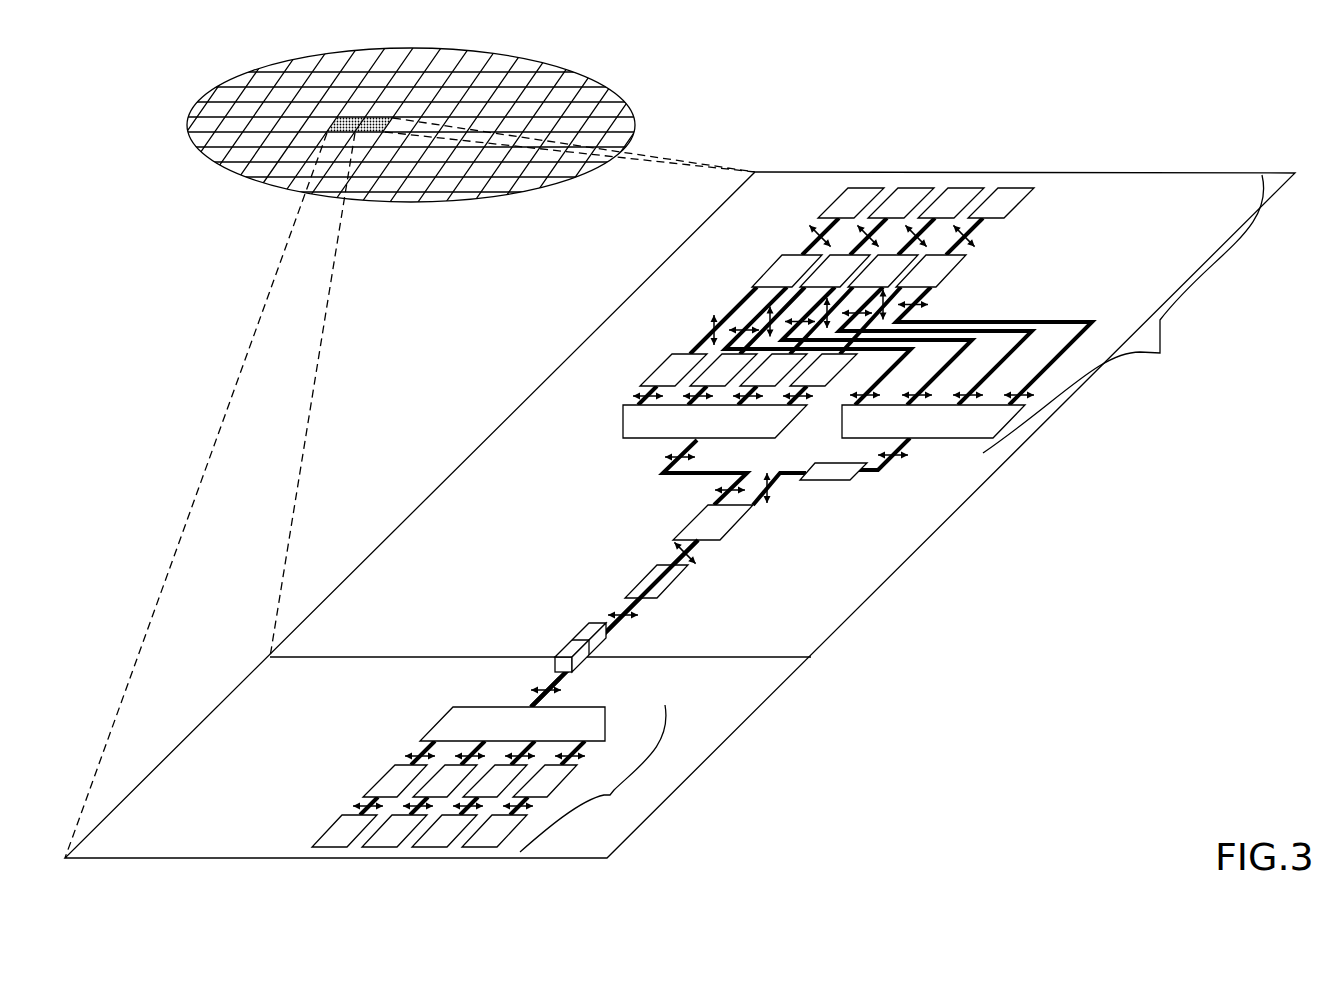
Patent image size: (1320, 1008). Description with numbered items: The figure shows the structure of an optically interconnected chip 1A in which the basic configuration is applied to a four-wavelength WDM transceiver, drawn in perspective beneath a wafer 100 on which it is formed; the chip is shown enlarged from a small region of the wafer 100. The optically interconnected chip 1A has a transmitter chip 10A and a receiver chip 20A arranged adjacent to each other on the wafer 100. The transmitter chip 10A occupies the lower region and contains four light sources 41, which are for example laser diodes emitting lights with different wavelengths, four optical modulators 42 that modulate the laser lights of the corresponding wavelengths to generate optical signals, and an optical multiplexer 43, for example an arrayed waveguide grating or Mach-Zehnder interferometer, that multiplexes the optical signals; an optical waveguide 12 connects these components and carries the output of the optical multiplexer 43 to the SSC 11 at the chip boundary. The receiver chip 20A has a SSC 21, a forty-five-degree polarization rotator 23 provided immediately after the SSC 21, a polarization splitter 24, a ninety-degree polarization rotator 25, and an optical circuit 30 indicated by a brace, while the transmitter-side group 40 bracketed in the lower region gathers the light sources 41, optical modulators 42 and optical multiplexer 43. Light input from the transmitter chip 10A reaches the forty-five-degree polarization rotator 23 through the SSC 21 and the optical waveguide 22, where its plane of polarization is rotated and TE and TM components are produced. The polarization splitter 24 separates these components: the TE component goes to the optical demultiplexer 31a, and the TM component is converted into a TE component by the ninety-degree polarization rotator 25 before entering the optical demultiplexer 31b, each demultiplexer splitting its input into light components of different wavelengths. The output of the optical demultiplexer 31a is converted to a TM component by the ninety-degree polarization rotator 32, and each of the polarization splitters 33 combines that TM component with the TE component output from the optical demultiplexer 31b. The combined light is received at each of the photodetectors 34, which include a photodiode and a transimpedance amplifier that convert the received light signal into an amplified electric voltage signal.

The wafer 100 is at (616, 90).
The optically interconnected chip 1A is at (410, 338).
The transmitter chip 10A is at (228, 700).
The receiver chip 20A is at (571, 356).
The SSC 11 is at (568, 652).
The optical waveguide 12 is at (530, 688).
The SSC 21 is at (592, 625).
The optical waveguide 22 is at (617, 622).
The 45-degree polarization rotator 23 is at (648, 587).
The polarization splitter 24 is at (697, 530).
The 90-degree polarization rotator 25 is at (822, 478).
The optical circuit 30 is at (1123, 314).
The optical demultiplexer 31a is at (645, 428).
The optical demultiplexer 31b is at (990, 440).
The 90-degree polarization rotator 32 is at (660, 366).
The polarization splitters 33 is at (767, 272).
The photodetectors 34 is at (833, 204).
The peripheral block 40 is at (593, 778).
The light sources 41 is at (331, 828).
The optical modulators 42 is at (383, 778).
The optical multiplexer 43 is at (439, 723).